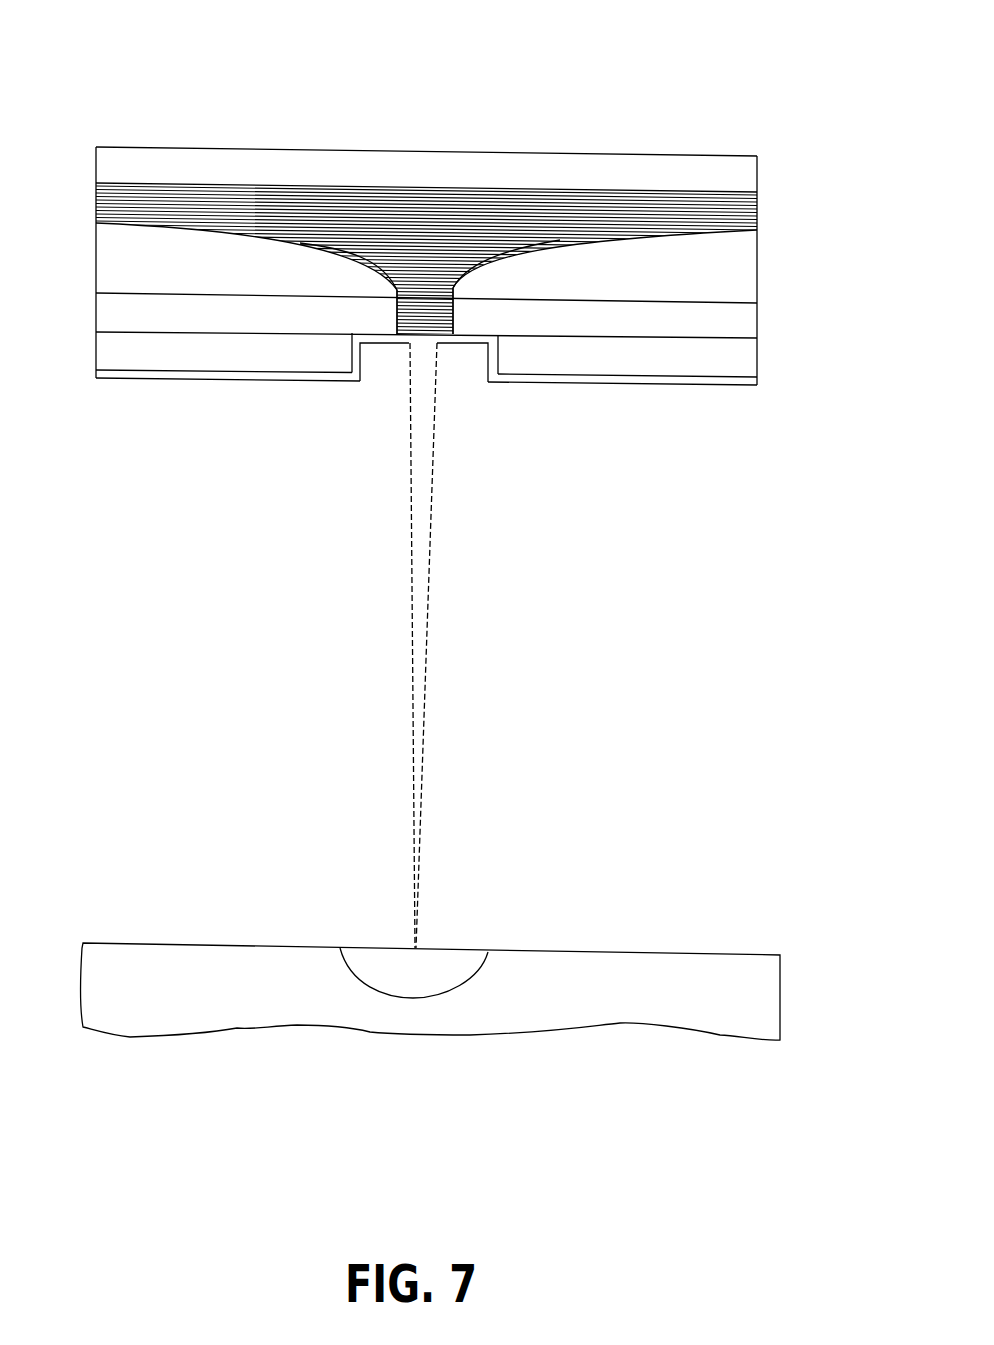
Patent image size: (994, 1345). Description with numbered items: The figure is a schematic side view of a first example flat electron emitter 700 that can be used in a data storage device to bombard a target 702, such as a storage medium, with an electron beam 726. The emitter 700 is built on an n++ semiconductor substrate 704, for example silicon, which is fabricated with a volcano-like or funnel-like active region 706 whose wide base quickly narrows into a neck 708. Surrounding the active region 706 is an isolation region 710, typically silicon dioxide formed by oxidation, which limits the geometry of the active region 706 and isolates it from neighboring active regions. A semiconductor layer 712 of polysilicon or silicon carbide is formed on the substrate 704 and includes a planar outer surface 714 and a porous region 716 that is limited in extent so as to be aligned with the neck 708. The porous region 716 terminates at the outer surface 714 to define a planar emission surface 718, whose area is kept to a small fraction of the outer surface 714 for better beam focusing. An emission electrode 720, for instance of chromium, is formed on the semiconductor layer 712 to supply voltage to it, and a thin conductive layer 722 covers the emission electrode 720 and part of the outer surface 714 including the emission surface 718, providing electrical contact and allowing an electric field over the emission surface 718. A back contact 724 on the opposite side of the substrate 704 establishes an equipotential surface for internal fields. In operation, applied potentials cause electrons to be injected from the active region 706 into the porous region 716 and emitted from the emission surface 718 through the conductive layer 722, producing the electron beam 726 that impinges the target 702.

The flat electron emitter 700 is at (787, 88).
The target 702 is at (765, 915).
The n++ semiconductor substrate 704 is at (757, 258).
The active region 706 is at (426, 264).
The neck 708 is at (458, 279).
The isolation region 710 is at (228, 276).
The semiconductor layer 712 is at (757, 313).
The outer surface 714 is at (285, 334).
The porous region 716 is at (437, 318).
The emission surface 718 is at (407, 340).
The emission electrode 720 is at (757, 368).
The conductive layer 722 is at (680, 379).
The back contact 724 is at (757, 175).
The electron beam 726 is at (430, 560).